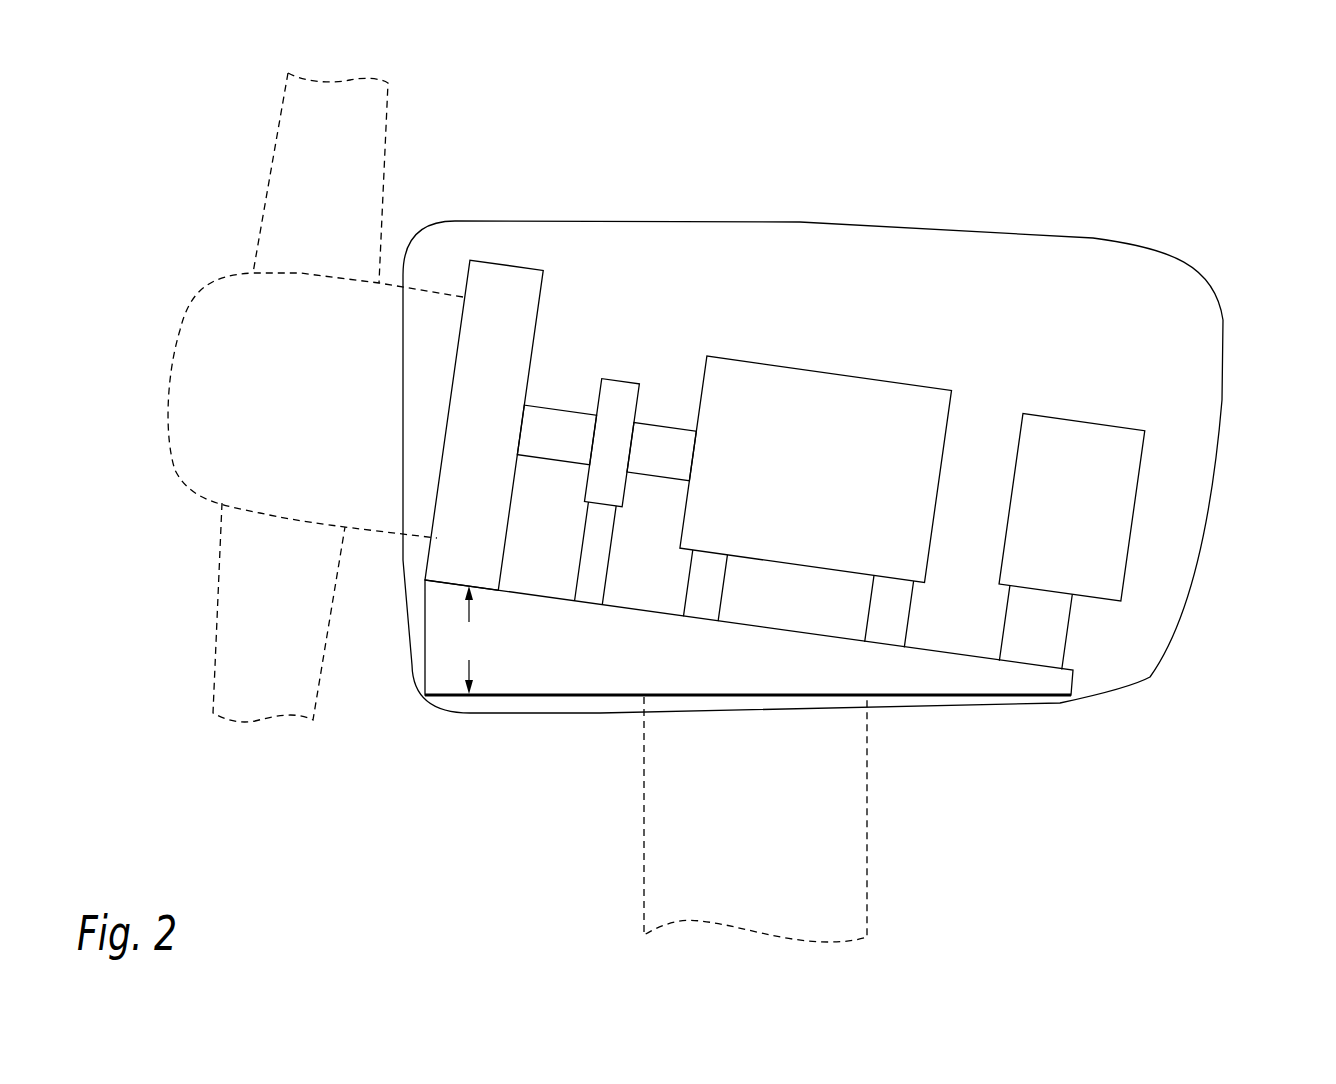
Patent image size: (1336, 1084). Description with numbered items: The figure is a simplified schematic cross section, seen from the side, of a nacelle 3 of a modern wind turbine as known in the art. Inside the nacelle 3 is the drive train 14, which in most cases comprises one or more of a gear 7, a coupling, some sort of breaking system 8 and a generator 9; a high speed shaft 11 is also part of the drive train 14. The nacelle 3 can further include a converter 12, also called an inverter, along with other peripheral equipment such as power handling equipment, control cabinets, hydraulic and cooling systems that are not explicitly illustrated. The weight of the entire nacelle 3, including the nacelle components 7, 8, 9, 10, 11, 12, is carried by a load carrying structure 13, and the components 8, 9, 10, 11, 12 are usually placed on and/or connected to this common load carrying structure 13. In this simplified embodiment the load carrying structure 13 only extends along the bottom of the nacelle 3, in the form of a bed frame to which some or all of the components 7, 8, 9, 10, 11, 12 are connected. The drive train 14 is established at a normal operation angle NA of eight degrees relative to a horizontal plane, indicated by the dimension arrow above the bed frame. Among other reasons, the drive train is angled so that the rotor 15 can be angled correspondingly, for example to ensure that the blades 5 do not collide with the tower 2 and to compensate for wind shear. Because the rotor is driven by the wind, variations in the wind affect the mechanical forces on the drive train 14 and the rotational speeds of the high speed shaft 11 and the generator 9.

The tower 2 is at (785, 867).
The nacelle 3 is at (1266, 250).
The blades 5 is at (347, 170).
The gear 7 is at (503, 298).
The breaking system 8 is at (622, 403).
The generator 9 is at (778, 415).
The nacelle component 10 is at (427, 468).
The high speed shaft 11 is at (552, 433).
The converter 12 is at (1093, 470).
The load carrying structure 13 is at (1025, 682).
The drive train 14 is at (896, 257).
The rotor 15 is at (230, 347).